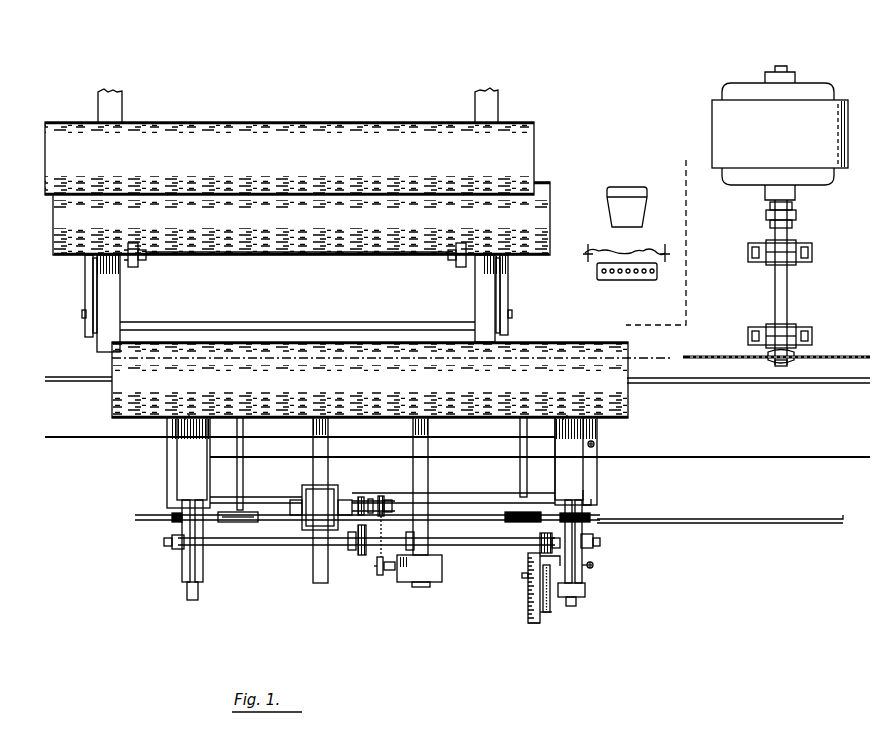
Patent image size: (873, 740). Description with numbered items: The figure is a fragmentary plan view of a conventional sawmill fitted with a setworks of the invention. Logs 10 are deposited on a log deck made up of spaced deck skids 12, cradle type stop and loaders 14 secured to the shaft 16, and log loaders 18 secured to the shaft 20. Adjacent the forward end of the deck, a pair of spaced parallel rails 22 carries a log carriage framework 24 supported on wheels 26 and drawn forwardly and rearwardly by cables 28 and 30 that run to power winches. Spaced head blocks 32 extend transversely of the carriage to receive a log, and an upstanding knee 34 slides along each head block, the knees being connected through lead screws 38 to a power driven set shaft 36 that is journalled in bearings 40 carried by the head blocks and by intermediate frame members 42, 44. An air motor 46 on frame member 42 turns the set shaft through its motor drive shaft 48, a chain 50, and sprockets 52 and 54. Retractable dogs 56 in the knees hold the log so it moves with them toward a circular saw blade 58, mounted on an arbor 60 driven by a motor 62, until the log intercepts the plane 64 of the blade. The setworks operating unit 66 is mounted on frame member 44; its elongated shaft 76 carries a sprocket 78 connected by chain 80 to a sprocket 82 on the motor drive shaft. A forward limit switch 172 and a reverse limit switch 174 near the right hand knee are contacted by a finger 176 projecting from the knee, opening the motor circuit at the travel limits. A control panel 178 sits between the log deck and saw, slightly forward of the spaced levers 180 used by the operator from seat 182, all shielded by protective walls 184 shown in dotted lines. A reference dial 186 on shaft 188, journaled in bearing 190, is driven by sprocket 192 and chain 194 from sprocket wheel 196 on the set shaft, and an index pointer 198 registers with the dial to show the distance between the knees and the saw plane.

The logs 10 is at (286, 122).
The deck skids 12 is at (121, 306).
The cradle type stop and loaders 14 is at (135, 262).
The shaft 16 is at (273, 262).
The log loaders 18 is at (85, 302).
The shaft 20 is at (350, 322).
The rails 22 is at (92, 381).
The log carriage framework 24 is at (166, 470).
The wheels 26 is at (174, 521).
The cable 28 is at (762, 457).
The cable 30 is at (132, 437).
The head blocks 32 is at (182, 565).
The knee 34 is at (182, 478).
The set shaft 36 is at (250, 547).
The lead screws 38 is at (198, 596).
The bearings 40 is at (172, 546).
The intermediate frame member 42 is at (312, 468).
The intermediate frame member 44 is at (429, 468).
The air motor 46 is at (281, 507).
The motor drive shaft 48 is at (347, 499).
The chain 50 is at (361, 495).
The sprocket 52 is at (371, 498).
The sprocket 54 is at (361, 558).
The retractable dogs 56 is at (380, 432).
The saw blade 58 is at (842, 355).
The arbor 60 is at (788, 298).
The motor 62 is at (724, 131).
The plane of the saw blade 64 is at (654, 360).
The operating unit 66 is at (432, 584).
The elongated shaft 76 is at (388, 575).
The sprocket 78 is at (376, 578).
The chain 80 is at (382, 530).
The sprocket 82 is at (384, 498).
The forward limit switch 172 is at (596, 444).
The reverse limit switch 174 is at (594, 567).
The finger 176 is at (600, 496).
The control panel 178 is at (602, 280).
The levers 180 is at (626, 245).
The seat 182 is at (610, 214).
The protective walls 184 is at (688, 226).
The reference dial 186 is at (528, 623).
The shaft 188 is at (522, 600).
The bearing 190 is at (586, 591).
The sprocket 192 is at (548, 610).
The chain 194 is at (546, 612).
The sprocket wheel 196 is at (544, 537).
The index pointer 198 is at (540, 559).